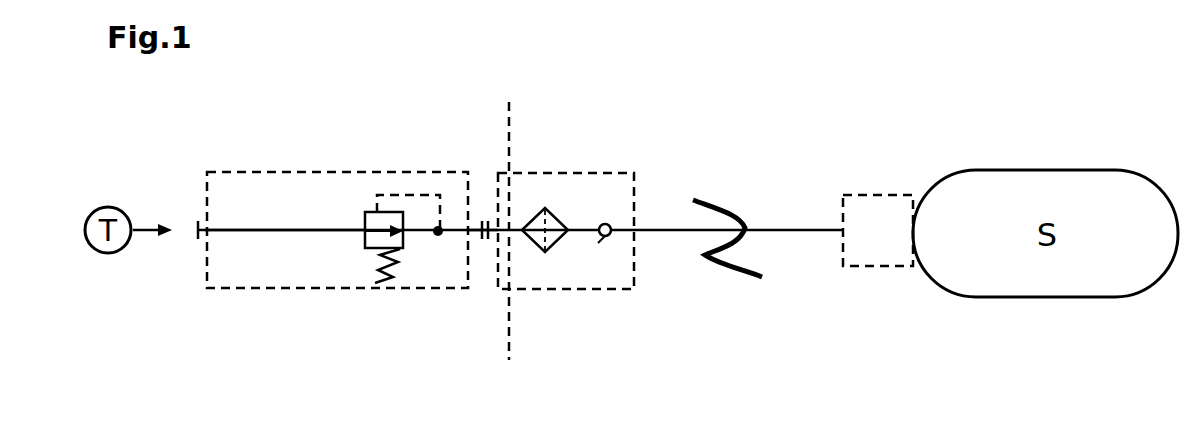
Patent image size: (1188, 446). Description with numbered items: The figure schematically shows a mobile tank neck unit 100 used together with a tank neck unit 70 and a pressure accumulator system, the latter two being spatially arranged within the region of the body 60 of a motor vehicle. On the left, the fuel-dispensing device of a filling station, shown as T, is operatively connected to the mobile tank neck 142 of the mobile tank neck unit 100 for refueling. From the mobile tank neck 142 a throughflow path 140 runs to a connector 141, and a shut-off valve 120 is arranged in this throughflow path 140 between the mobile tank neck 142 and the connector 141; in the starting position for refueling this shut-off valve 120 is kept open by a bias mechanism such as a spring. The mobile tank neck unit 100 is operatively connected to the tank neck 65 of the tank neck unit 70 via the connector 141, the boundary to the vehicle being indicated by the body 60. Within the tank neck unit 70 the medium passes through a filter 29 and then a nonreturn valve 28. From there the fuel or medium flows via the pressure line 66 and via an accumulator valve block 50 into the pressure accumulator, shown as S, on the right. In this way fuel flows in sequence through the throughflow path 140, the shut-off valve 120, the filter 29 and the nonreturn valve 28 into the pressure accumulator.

The mobile tank neck 142 is at (195, 210).
The mobile tank neck unit 100 is at (350, 163).
The throughflow path 140 is at (298, 233).
The shut-off valve 120 is at (420, 215).
The connector 141 is at (478, 210).
The tank neck 65 is at (490, 248).
The body 60 is at (515, 320).
The tank neck unit 70 is at (622, 279).
The filter 29 is at (555, 202).
The nonreturn valve 28 is at (655, 225).
The pressure line 66 is at (607, 212).
The accumulator valve block 50 is at (883, 210).